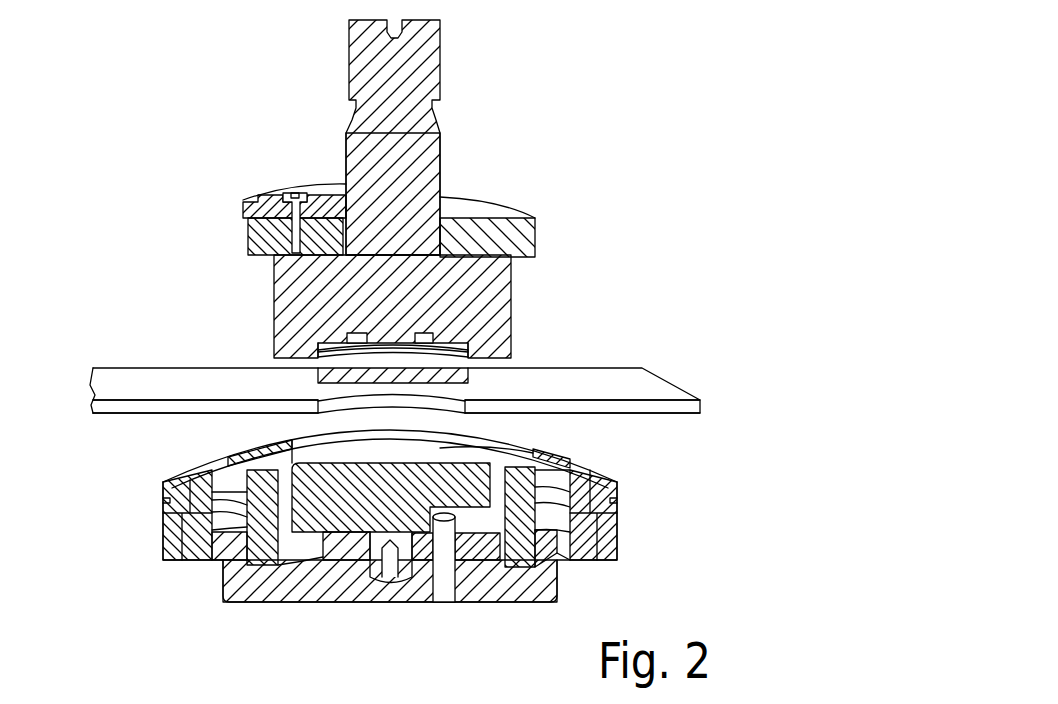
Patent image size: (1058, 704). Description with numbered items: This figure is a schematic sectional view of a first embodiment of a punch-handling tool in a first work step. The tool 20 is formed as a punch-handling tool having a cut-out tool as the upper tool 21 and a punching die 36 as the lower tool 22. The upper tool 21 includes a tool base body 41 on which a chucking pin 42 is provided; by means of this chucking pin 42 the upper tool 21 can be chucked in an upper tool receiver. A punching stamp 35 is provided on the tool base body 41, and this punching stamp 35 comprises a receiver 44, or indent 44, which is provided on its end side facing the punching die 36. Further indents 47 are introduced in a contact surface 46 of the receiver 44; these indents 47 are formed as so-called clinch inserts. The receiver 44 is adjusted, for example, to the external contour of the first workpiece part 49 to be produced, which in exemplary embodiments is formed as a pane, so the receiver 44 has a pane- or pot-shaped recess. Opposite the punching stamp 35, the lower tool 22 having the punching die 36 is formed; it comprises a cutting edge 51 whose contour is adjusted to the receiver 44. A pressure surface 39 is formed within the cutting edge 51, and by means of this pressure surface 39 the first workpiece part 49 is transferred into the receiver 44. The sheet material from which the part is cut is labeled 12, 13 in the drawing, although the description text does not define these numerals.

The tool 20 is at (683, 207).
The upper tool 21 is at (540, 157).
The lower tool 22 is at (143, 530).
The sheet layer 12 is at (640, 385).
The sheet layer 13 is at (396, 406).
The punching stamp 35 is at (480, 334).
The punching die 36 is at (653, 512).
The pressure surface 39 is at (402, 455).
The tool base body 41 is at (408, 245).
The chucking pin 42 is at (468, 73).
The receiver 44 is at (395, 352).
The contact surface 46 is at (340, 358).
The indents 47 is at (430, 318).
The first workpiece part 49 is at (490, 385).
The cutting edge 51 is at (338, 465).